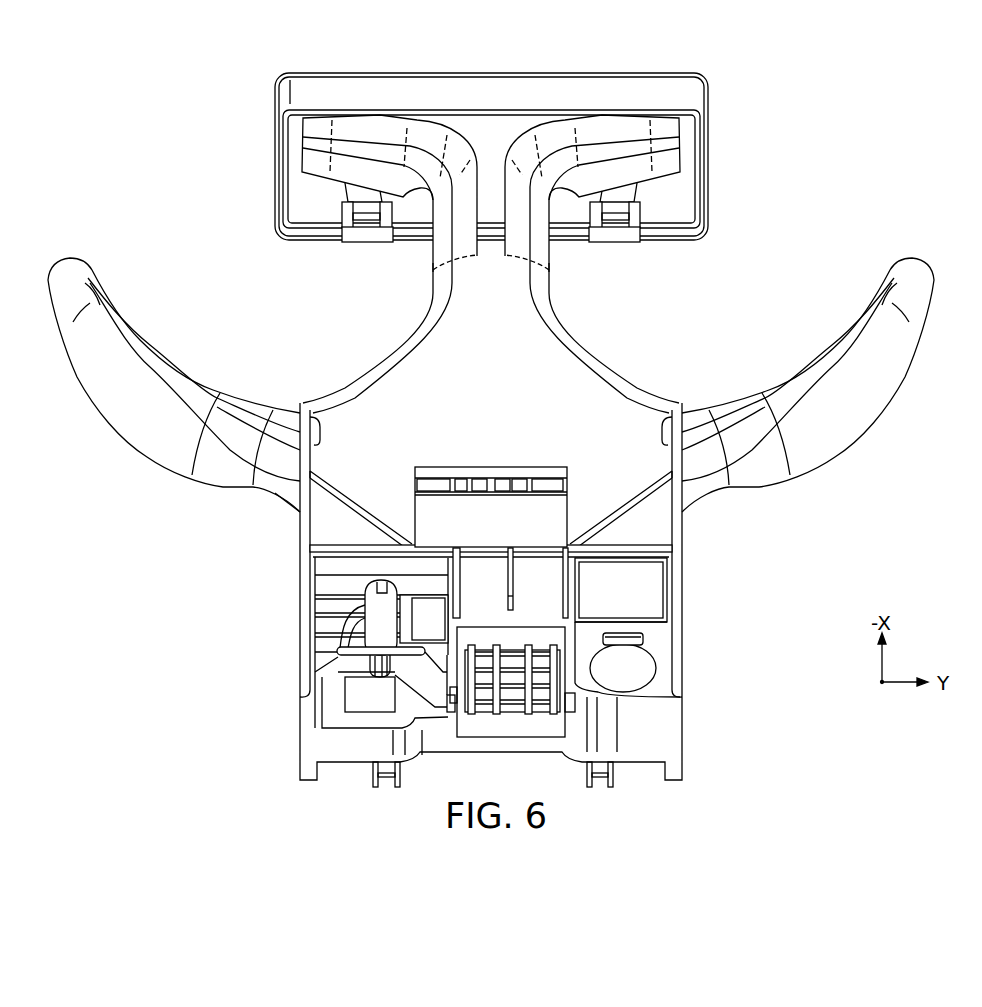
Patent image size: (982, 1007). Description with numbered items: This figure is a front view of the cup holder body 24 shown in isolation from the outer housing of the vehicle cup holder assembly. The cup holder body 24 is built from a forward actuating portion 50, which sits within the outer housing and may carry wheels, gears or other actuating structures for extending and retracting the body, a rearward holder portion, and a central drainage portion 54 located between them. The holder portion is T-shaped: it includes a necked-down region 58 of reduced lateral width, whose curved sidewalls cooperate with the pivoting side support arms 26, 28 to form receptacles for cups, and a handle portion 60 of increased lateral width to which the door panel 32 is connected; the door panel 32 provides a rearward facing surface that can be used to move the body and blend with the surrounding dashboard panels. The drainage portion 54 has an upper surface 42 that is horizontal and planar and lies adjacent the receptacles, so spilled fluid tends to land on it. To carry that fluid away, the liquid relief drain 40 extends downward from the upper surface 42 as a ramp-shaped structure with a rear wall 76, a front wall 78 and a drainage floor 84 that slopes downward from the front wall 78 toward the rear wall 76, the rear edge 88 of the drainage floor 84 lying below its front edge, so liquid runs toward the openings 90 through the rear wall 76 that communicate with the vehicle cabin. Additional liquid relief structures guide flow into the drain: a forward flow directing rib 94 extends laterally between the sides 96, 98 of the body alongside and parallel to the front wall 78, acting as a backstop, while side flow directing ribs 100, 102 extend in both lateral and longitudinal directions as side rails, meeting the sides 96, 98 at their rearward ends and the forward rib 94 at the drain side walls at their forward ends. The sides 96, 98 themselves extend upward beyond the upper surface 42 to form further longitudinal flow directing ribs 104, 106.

The cup holder body 24 is at (549, 591).
The side support arm 26 is at (810, 453).
The side support arm 28 is at (170, 457).
The door panel 32 is at (620, 73).
The liquid relief drain 40 is at (442, 464).
The upper surface 42 is at (570, 387).
The actuating portion 50 is at (714, 688).
The drainage portion 54 is at (283, 517).
The necked-down region 58 is at (413, 280).
The handle portion 60 is at (678, 190).
The rear wall 76 is at (463, 475).
The front wall 78 is at (480, 545).
The drainage floor 84 is at (513, 467).
The rear edge 88 is at (494, 482).
The openings 90 is at (545, 482).
The forward flow directing rib 94 is at (660, 532).
The side 96 is at (684, 610).
The side 98 is at (300, 615).
The side flow directing rib 100 is at (652, 485).
The side flow directing rib 102 is at (330, 485).
The flow directing rib 104 is at (667, 440).
The flow directing rib 106 is at (316, 440).